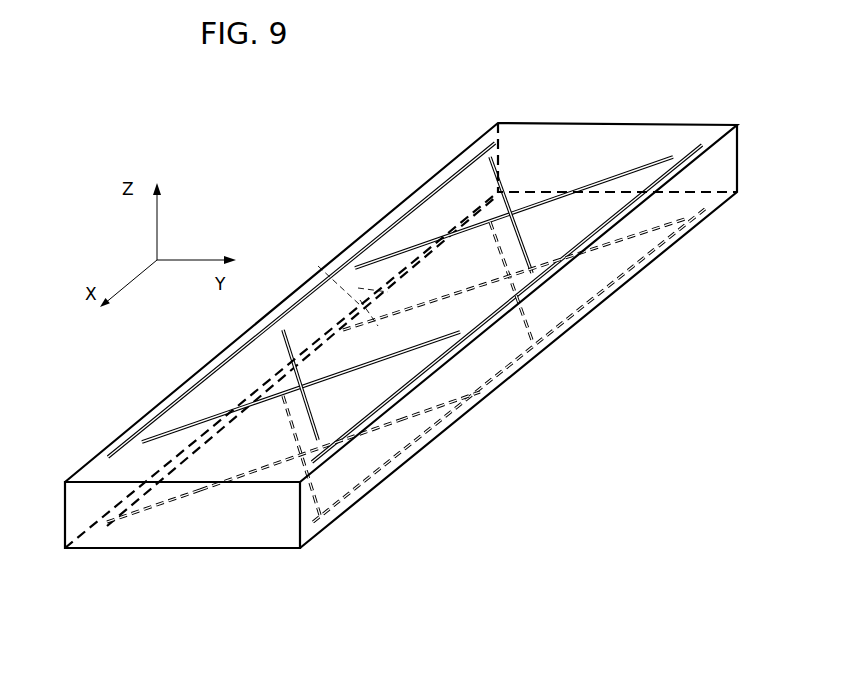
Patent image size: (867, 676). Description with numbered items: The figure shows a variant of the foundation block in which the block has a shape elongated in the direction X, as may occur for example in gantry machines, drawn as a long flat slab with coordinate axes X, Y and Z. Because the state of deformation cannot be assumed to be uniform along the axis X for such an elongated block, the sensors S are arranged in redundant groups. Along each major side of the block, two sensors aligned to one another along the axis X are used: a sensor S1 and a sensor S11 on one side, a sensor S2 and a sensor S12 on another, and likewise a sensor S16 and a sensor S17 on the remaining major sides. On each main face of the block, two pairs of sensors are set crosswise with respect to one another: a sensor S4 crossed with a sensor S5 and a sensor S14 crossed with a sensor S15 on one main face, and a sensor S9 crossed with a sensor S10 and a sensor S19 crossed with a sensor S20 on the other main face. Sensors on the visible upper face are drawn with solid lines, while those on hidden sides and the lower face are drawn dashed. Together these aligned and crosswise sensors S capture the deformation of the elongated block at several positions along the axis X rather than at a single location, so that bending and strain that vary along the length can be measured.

The sensors S is at (608, 305).
The sensor S1 is at (421, 200).
The sensor S2 is at (642, 196).
The sensor S4 is at (494, 170).
The sensor S5 is at (613, 177).
The sensor S9 is at (313, 268).
The sensor S10 is at (656, 236).
The sensor S11 is at (358, 300).
The sensor S12 is at (410, 396).
The sensor S14 is at (280, 345).
The sensor S15 is at (181, 426).
The sensor S16 is at (137, 517).
The sensor S17 is at (372, 483).
The sensor S19 is at (318, 490).
The sensor S20 is at (200, 487).